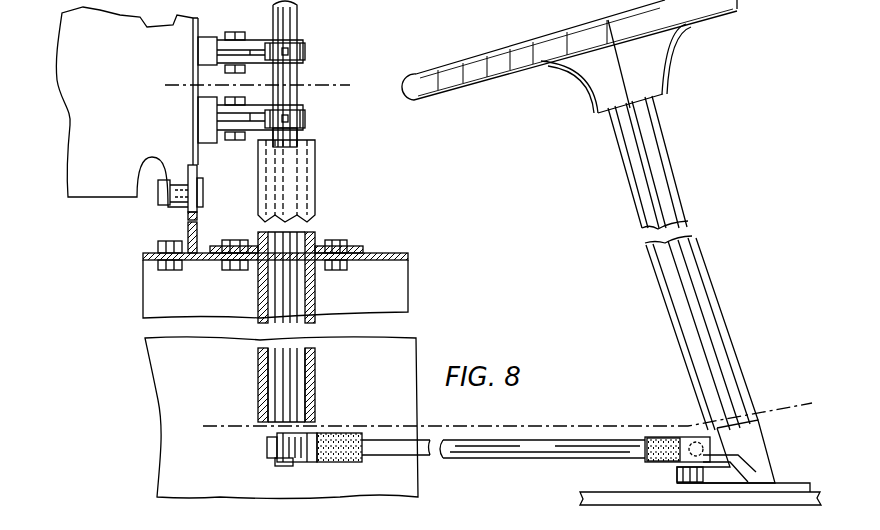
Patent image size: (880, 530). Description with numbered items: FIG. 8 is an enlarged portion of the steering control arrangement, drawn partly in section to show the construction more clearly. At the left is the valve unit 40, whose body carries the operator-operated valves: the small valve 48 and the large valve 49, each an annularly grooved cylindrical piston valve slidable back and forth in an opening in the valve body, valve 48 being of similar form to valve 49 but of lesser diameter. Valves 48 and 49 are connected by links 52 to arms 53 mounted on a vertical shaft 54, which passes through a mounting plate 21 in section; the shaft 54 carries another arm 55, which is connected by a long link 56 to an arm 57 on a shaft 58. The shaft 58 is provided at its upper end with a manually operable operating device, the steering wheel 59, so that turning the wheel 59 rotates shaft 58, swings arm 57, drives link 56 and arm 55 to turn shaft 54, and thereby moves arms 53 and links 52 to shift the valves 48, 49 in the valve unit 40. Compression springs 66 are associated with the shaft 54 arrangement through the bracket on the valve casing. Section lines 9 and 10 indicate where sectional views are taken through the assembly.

The section line 9- 9 is at (222, 443).
The section line 10- 10 is at (177, 105).
The mounting plate 21 is at (155, 298).
The valve unit 40 is at (110, 190).
The small valve 48 is at (202, 35).
The large valve 49 is at (201, 138).
The links 52 is at (260, 38).
The arms 53 is at (305, 50).
The vertical shaft 54 is at (287, 378).
The arm 55 is at (268, 449).
The long link 56 is at (318, 461).
The arm 57 is at (676, 476).
The shaft 58 is at (748, 451).
The steering wheel 59 is at (667, 118).
The compression springs 66 is at (738, 499).